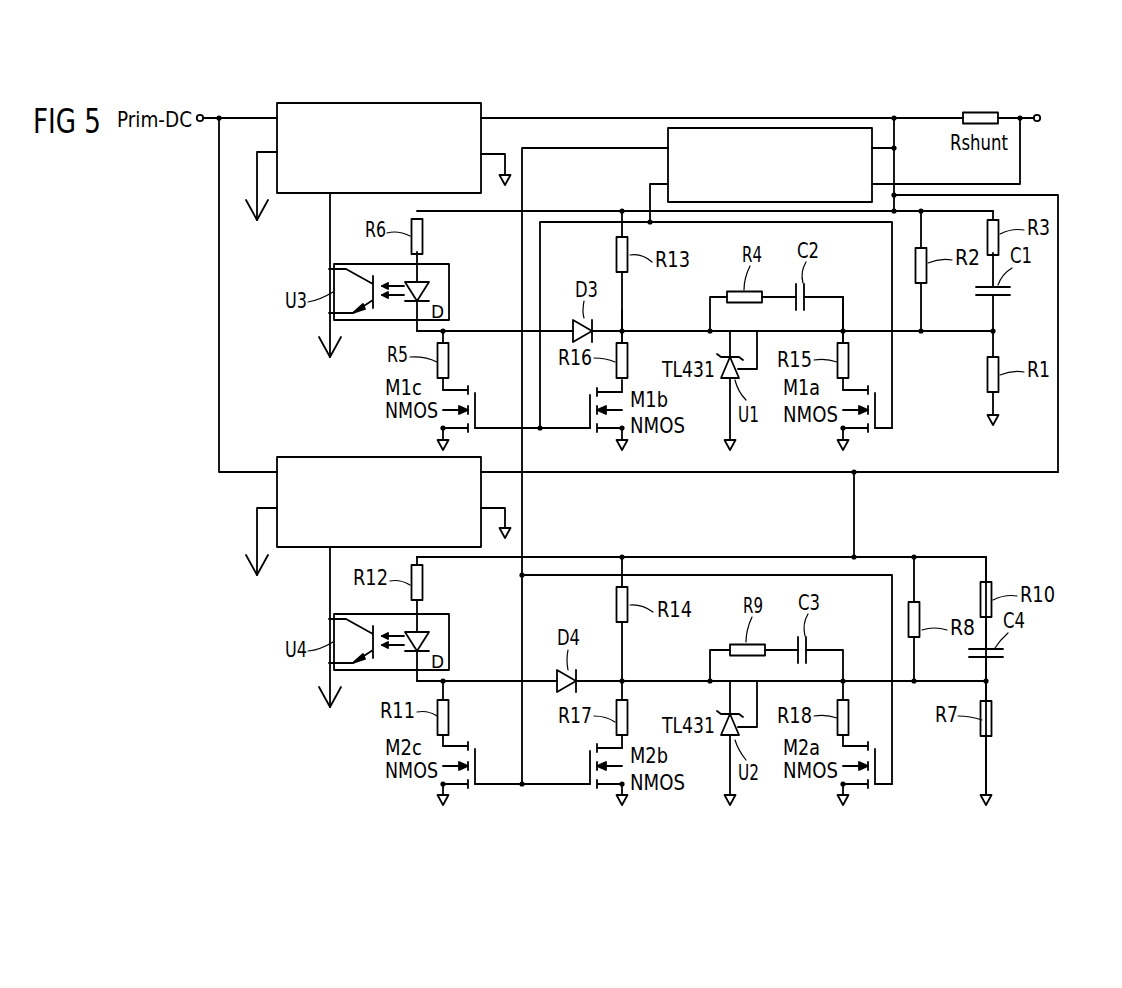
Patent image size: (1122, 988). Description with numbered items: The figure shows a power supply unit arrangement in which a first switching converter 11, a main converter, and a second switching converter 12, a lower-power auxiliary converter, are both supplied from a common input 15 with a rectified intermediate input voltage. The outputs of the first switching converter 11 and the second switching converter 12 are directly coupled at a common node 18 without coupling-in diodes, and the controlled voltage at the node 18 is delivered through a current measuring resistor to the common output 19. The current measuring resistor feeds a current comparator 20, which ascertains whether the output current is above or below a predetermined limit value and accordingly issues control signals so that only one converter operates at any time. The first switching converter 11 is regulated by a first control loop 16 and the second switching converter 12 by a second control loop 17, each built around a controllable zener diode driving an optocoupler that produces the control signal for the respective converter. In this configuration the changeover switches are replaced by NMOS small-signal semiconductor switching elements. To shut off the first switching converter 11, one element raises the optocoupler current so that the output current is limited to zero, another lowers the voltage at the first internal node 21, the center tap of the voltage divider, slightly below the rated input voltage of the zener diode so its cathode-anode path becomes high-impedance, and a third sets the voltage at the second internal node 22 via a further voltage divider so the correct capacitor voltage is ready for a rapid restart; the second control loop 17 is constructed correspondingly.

The first switching converter 11 is at (311, 197).
The second switching converter 12 is at (305, 551).
The input 15 is at (198, 124).
The first control loop 16 is at (1043, 487).
The second control loop 17 is at (1029, 757).
The node 18 is at (897, 122).
The common output 19 is at (1038, 124).
The current comparator 20 is at (666, 168).
The first internal node 21 is at (848, 326).
The second internal node 22 is at (626, 327).